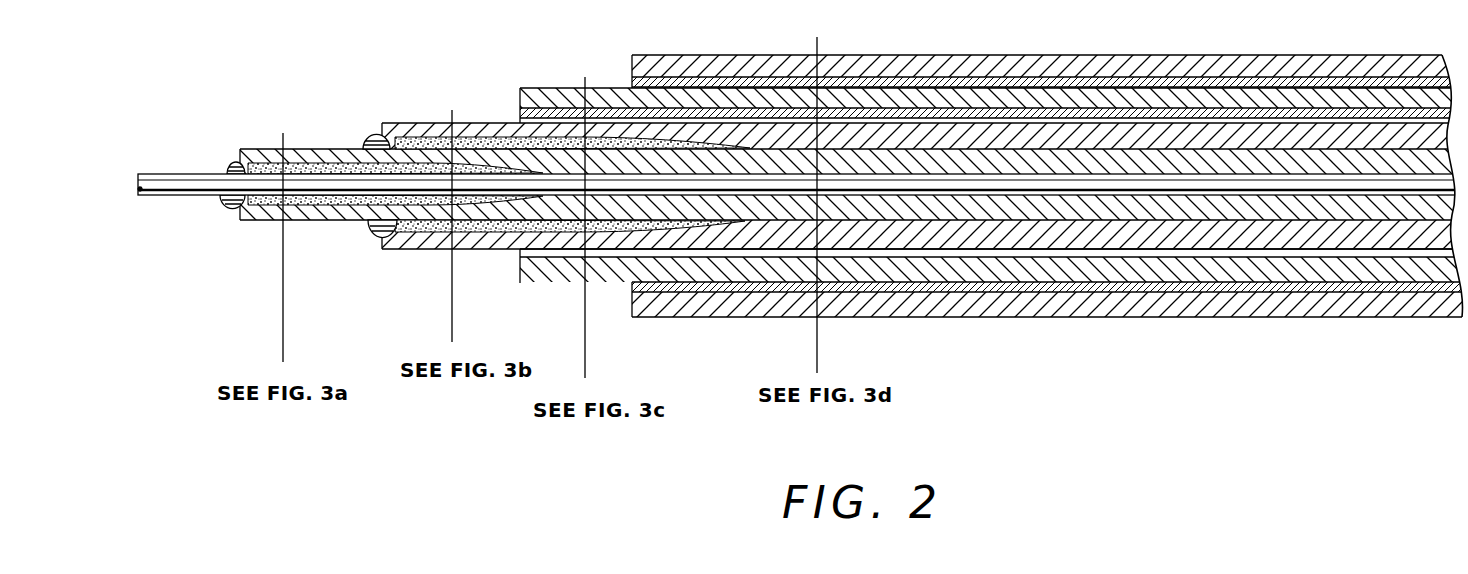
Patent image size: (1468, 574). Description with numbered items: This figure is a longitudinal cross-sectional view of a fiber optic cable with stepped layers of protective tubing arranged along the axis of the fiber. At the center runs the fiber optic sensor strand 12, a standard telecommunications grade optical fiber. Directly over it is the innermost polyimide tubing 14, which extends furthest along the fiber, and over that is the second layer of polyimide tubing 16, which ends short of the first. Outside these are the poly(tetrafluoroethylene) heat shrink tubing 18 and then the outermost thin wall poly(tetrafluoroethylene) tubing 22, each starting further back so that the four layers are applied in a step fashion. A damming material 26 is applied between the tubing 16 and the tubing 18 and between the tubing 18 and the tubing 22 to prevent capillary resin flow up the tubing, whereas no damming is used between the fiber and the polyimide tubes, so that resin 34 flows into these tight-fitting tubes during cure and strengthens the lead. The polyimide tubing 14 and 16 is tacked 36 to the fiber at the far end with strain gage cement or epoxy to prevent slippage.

The fiber optic sensor strand 12 is at (179, 173).
The innermost polyimide tubing 14 is at (238, 149).
The second layer of polyimide tubing 16 is at (378, 124).
The heat shrink tubing 18 is at (518, 90).
The thin wall poly(tetrafluoroethylene) tubing 22 is at (632, 56).
The damming material 26 is at (630, 82).
The resin 34 is at (300, 163).
The tack 36 is at (226, 163).